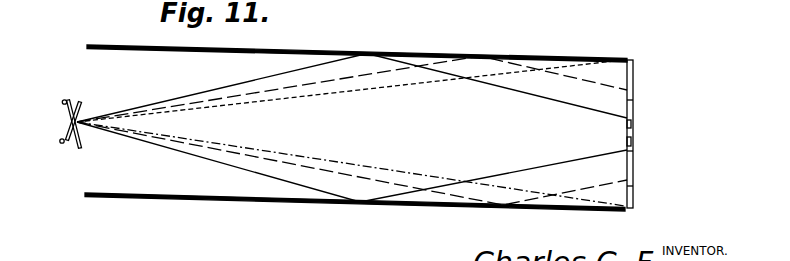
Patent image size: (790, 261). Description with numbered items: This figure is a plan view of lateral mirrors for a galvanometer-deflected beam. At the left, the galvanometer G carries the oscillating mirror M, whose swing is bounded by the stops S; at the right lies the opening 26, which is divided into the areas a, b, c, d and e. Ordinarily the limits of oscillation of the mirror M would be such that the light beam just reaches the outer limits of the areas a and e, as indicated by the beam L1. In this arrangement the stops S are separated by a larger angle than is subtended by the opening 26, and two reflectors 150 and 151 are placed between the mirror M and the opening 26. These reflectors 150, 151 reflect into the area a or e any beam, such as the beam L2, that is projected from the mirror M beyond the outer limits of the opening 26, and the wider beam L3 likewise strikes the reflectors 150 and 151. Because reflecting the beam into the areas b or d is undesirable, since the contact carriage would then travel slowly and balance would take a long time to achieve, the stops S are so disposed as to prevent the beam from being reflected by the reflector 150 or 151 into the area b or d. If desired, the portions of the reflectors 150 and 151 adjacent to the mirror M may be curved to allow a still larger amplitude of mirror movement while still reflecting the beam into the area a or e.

The reflector 150 is at (463, 54).
The reflector 151 is at (421, 209).
The opening 26 is at (640, 73).
The area a is at (635, 101).
The area b is at (634, 125).
The area c is at (634, 140).
The area d is at (634, 152).
The area e is at (634, 187).
The light beam L1 is at (410, 86).
The light beam L2 is at (328, 84).
The light beam L3 is at (233, 177).
The galvanometer G is at (54, 111).
The stops S is at (66, 100).
The mirror M is at (77, 149).